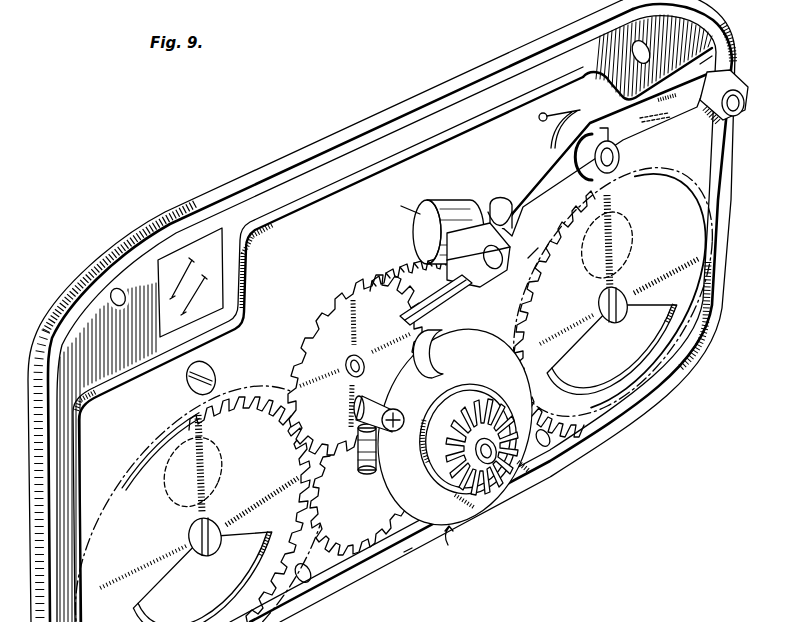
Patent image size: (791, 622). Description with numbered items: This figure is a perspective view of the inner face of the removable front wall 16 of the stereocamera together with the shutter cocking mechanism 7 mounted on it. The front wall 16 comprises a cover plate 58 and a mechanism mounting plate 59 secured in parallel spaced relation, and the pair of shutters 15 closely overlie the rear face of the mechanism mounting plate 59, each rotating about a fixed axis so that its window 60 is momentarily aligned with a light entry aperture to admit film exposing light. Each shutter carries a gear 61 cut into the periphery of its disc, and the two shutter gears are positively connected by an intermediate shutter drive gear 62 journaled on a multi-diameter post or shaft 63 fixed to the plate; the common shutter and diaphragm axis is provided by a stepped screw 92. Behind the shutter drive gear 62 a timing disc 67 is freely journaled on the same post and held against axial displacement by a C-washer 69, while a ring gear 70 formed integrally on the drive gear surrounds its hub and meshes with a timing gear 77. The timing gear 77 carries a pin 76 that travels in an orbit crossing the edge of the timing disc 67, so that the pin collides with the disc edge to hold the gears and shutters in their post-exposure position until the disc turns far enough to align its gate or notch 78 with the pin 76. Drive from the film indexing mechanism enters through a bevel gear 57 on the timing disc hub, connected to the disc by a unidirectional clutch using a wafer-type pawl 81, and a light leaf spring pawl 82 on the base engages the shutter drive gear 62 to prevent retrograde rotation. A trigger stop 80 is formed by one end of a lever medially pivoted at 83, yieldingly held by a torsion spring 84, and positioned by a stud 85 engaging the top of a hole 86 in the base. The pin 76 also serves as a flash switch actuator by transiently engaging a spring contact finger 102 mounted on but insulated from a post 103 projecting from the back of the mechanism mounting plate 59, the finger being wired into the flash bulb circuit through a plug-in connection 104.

The shutter cocking mechanism 7 is at (455, 540).
The shutters 15 is at (393, 375).
The front wall 16 is at (219, 186).
The bevel gear 57 is at (470, 510).
The cover plate 58 is at (306, 150).
The mechanism mounting plate 59 is at (300, 268).
The windows 60 is at (160, 592).
The gear 61 is at (210, 406).
The shutter drive gear 62 is at (405, 272).
The post or shaft 63 is at (528, 470).
The timing disc 67 is at (418, 493).
The C-washer 69 is at (500, 488).
The ring gear 70 is at (368, 472).
The pin 76 is at (380, 397).
The timing gear 77 is at (297, 343).
The gate or notch 78 is at (445, 365).
The trigger stop 80 is at (517, 204).
The pawl 81 is at (426, 440).
The pawl 82 is at (406, 554).
The pivot 83 is at (618, 155).
The torsion spring 84 is at (561, 125).
The stud 85 is at (737, 108).
The hole 86 is at (700, 64).
The screw 92 is at (226, 548).
The spring contact finger 102 is at (450, 292).
The post 103 is at (457, 206).
The connection 104 is at (532, 254).